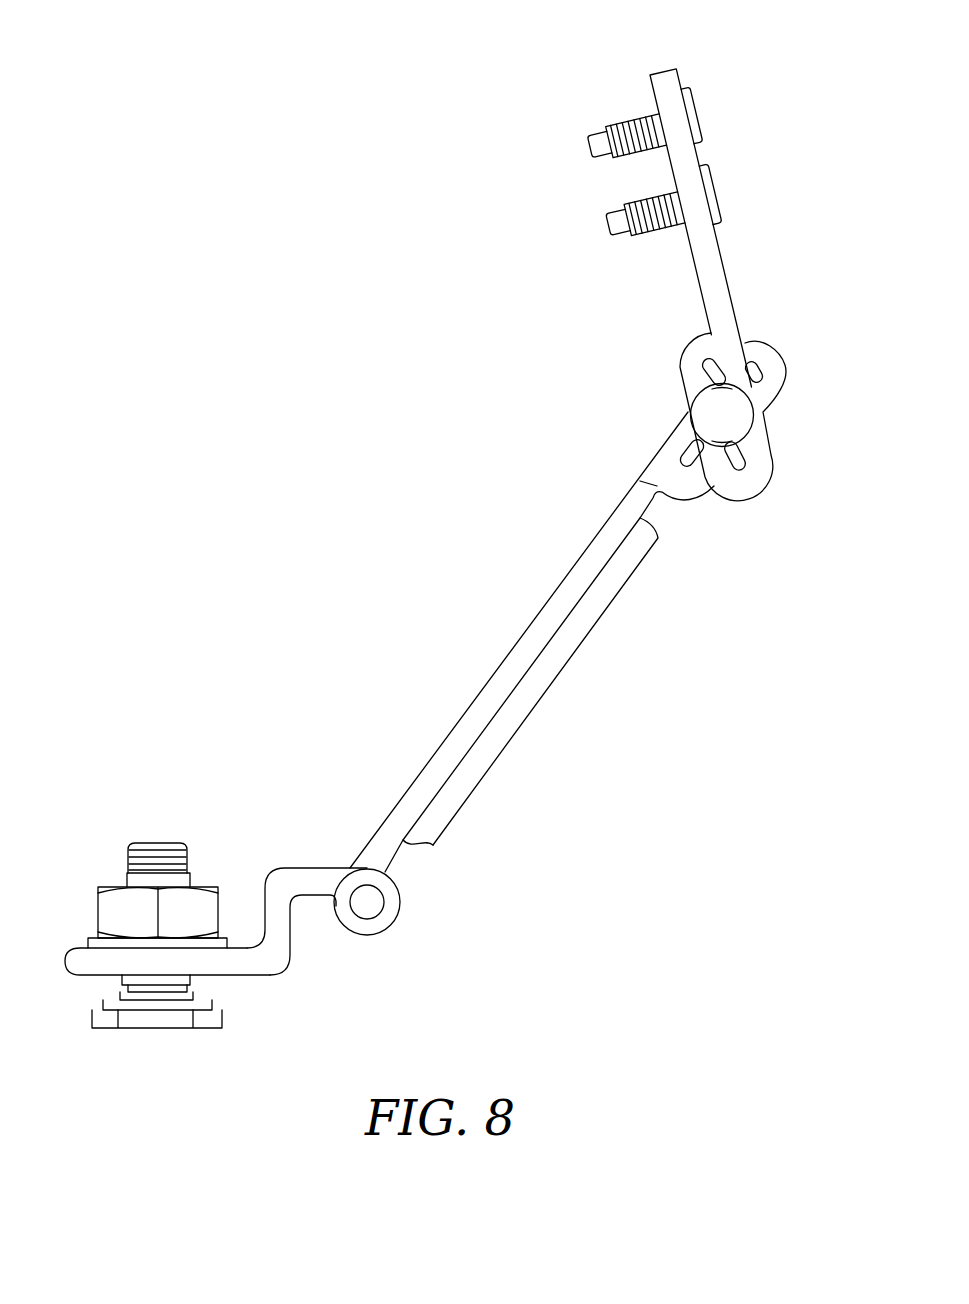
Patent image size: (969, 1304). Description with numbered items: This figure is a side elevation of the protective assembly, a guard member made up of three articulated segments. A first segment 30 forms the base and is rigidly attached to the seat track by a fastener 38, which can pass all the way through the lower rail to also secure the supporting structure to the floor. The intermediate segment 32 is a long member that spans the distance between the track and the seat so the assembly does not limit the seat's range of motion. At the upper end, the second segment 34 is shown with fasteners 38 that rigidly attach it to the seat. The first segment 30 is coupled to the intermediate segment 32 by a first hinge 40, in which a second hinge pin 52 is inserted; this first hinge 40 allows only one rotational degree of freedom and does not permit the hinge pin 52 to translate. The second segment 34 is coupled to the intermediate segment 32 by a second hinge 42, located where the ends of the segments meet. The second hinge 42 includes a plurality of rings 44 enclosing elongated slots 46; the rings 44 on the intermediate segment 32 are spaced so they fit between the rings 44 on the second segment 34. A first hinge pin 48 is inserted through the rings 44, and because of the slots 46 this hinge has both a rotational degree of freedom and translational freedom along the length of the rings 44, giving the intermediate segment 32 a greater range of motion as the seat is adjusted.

The first segment 30 is at (262, 962).
The intermediate segment 32 is at (505, 720).
The second segment 34 is at (710, 251).
The fastener 38 is at (613, 122).
The first hinge 40 is at (263, 916).
The second hinge 42 is at (734, 432).
The rings 44 is at (762, 350).
The elongated slots 46 is at (760, 374).
The first hinge pin 48 is at (707, 414).
The second hinge pin 52 is at (364, 902).